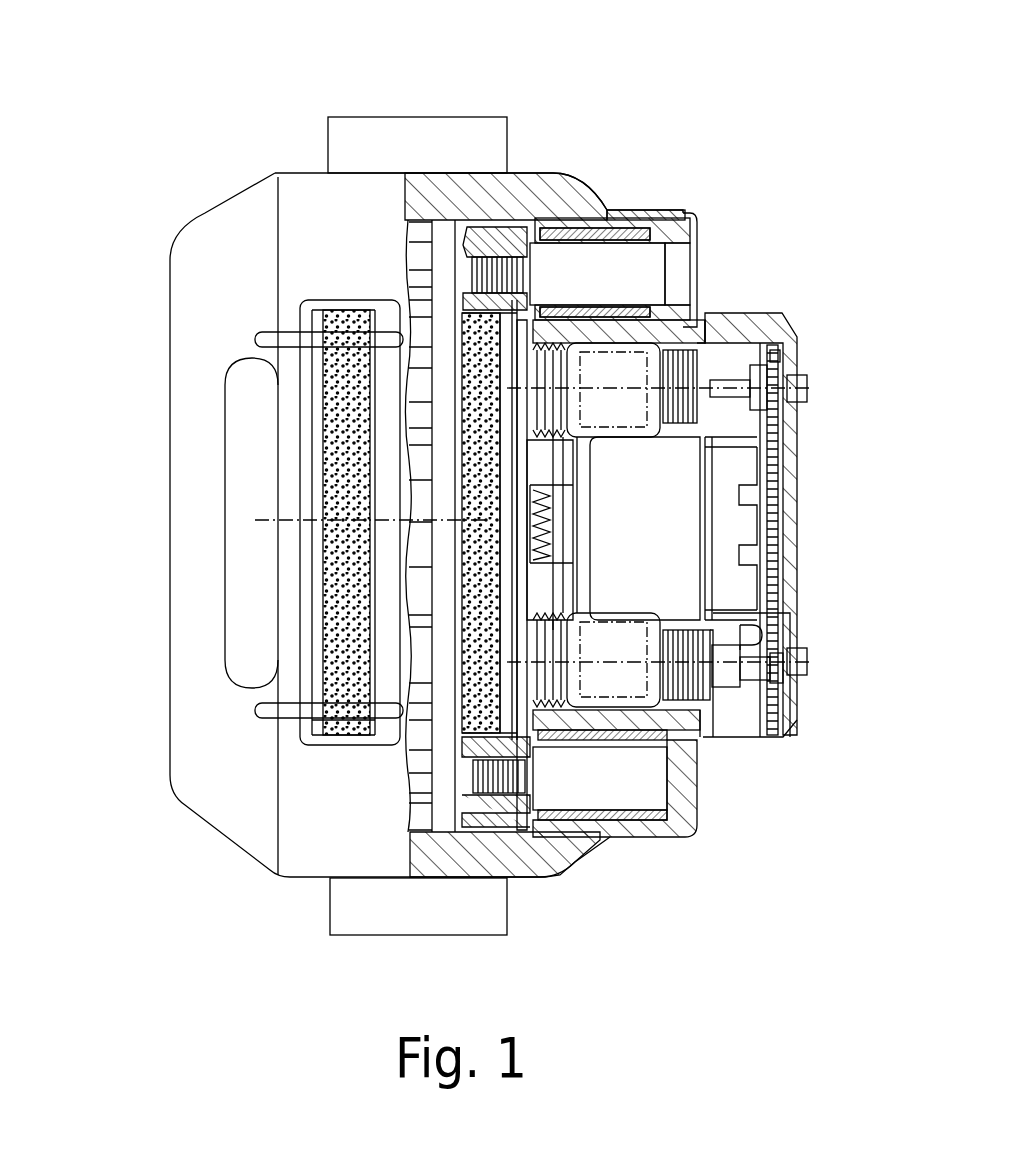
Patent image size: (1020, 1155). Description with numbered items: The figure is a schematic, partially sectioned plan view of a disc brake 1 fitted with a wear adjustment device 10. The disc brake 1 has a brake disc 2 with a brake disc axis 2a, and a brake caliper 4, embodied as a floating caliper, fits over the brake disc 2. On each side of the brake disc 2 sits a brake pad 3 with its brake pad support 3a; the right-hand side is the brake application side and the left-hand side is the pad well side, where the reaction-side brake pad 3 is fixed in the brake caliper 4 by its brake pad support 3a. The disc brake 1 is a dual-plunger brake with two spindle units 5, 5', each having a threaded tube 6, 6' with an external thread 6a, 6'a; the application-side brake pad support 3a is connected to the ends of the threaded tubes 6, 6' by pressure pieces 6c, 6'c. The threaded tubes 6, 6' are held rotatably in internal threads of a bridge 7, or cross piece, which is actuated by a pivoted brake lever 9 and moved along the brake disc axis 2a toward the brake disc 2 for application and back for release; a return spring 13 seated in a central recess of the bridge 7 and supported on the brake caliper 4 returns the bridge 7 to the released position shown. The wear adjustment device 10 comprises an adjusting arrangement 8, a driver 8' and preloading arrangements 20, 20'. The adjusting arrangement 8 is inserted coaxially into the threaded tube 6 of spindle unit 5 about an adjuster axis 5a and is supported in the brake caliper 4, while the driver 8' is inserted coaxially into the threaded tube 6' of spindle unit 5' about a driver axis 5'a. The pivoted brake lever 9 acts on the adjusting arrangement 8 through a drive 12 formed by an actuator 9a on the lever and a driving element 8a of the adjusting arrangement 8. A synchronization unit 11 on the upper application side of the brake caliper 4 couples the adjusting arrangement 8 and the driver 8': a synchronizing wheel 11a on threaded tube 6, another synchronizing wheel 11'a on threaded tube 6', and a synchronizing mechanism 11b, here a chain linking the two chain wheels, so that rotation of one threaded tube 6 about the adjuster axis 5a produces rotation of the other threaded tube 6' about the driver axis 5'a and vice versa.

The disc brake 1 is at (522, 90).
The brake disc 2 is at (420, 780).
The brake disc axis 2a is at (295, 520).
The brake pad 3 is at (477, 705).
The brake pad support 3a is at (317, 652).
The brake caliper 4 is at (600, 833).
The spindle unit 5 is at (799, 665).
The adjuster axis 5a is at (800, 665).
The spindle unit 5' is at (789, 387).
The driver axis 5'a is at (669, 242).
The threaded tube 6 is at (739, 753).
The external thread 6a is at (697, 698).
The pressure piece 6c is at (540, 723).
The threaded tube 6' is at (730, 278).
The external thread 6'a is at (708, 296).
The pressure piece 6'c is at (471, 197).
The bridge 7 is at (595, 343).
The adjusting arrangement 8 is at (765, 714).
The driving element 8a is at (748, 643).
The driver 8' is at (744, 250).
The pivoted brake lever 9 is at (733, 532).
The actuator 9a is at (735, 590).
The wear adjustment device 10 is at (764, 765).
The synchronization unit 11 is at (769, 483).
The synchronizing wheel 11a is at (790, 705).
The synchronizing mechanism 11b is at (778, 447).
The synchronizing wheel 11'a is at (818, 318).
The drive 12 is at (763, 620).
The return spring 13 is at (537, 508).
The preloading arrangement 20 is at (681, 587).
The preloading arrangement 20' is at (659, 261).